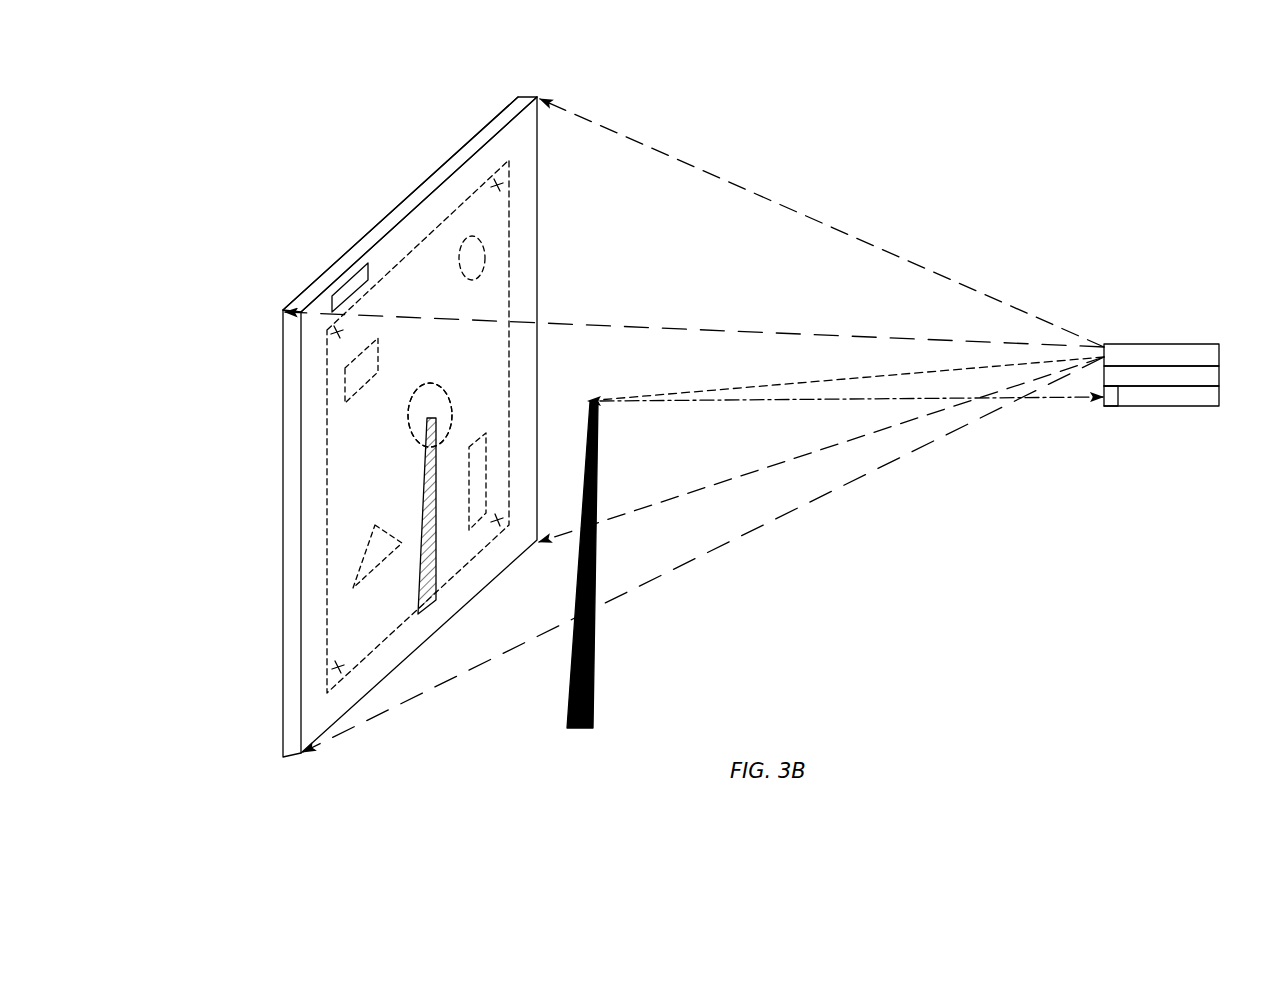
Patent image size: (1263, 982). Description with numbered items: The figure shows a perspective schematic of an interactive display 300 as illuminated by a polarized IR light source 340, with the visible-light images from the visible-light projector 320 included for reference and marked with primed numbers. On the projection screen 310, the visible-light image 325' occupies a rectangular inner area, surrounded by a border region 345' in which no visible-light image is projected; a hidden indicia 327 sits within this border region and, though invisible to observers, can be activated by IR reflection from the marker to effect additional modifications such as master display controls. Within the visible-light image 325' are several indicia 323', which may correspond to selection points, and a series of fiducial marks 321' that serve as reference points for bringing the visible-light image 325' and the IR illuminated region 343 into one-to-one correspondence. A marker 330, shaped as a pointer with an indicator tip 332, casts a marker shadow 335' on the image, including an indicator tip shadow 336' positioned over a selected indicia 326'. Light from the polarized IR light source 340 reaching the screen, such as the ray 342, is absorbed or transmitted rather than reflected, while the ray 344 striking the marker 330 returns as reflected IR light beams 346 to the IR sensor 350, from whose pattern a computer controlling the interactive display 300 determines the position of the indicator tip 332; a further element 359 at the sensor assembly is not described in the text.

The interactive display 300 is at (265, 100).
The projection screen 310 is at (502, 121).
The border region 345' is at (410, 204).
The visible-light image 325' is at (418, 422).
The hidden indicia 327 is at (350, 283).
The fiducial mark 321' is at (552, 179).
The indicia 323' is at (536, 258).
The indicator tip shadow 336' is at (521, 392).
The selected indicia 326' is at (326, 415).
The marker shadow 335' is at (325, 516).
The IR illuminated region 343 is at (385, 688).
The polarized IR light ray 342 is at (935, 270).
The IR light ray intercepting marker 344 is at (1007, 362).
The reflected IR light beam 346 is at (873, 400).
The marker 330 is at (596, 549).
The indicator tip 332 is at (603, 413).
The polarized IR light source 340 is at (1168, 350).
The visible-light projector 320 is at (1160, 375).
The IR sensor 350 is at (1200, 398).
The camera aperture 359 is at (1111, 405).